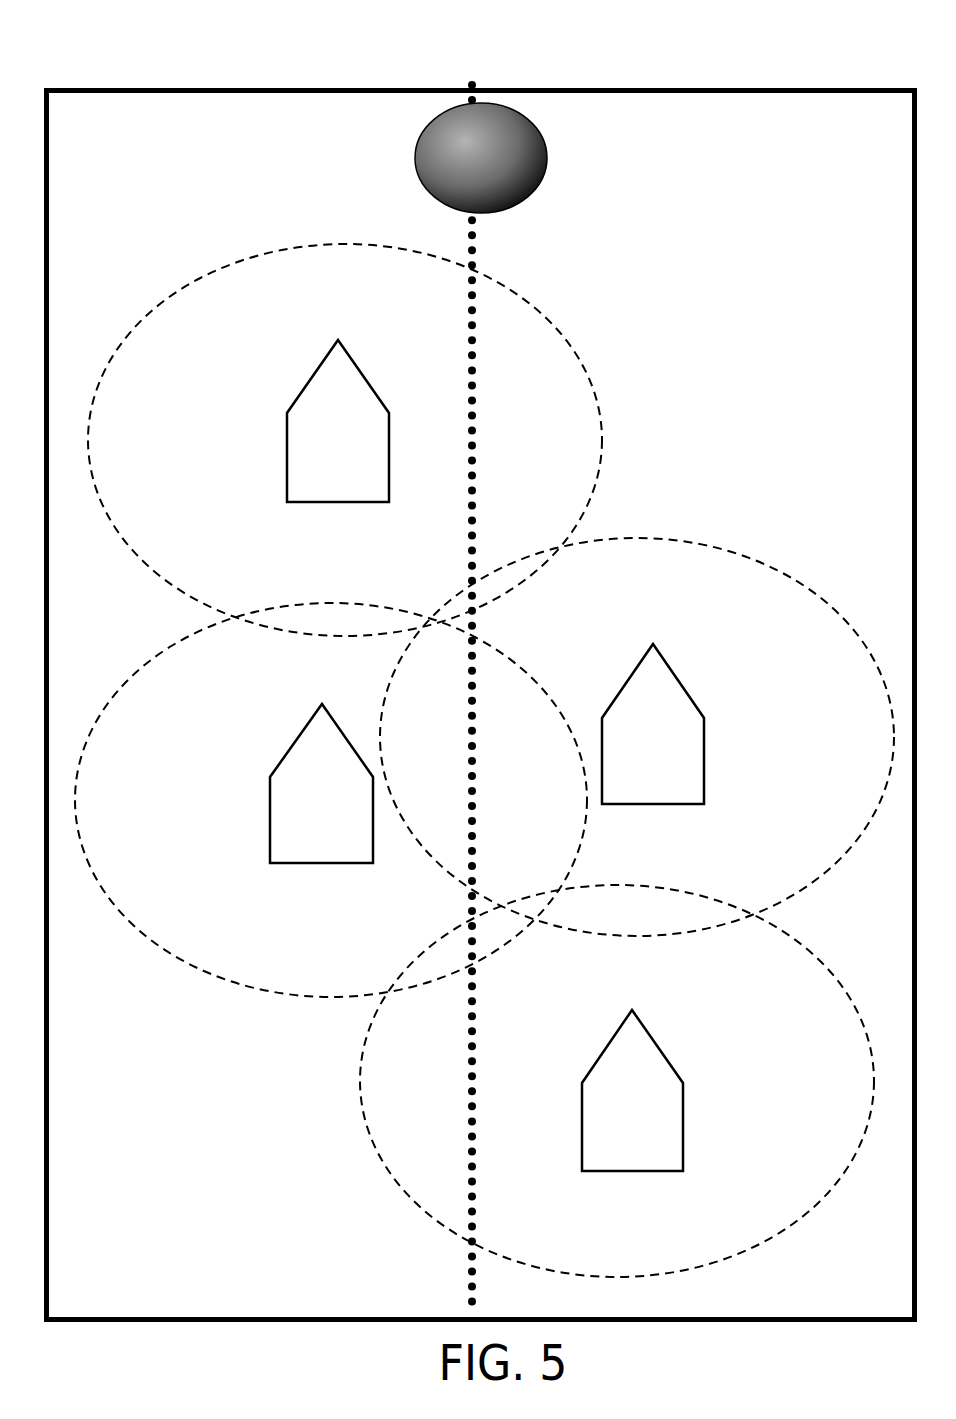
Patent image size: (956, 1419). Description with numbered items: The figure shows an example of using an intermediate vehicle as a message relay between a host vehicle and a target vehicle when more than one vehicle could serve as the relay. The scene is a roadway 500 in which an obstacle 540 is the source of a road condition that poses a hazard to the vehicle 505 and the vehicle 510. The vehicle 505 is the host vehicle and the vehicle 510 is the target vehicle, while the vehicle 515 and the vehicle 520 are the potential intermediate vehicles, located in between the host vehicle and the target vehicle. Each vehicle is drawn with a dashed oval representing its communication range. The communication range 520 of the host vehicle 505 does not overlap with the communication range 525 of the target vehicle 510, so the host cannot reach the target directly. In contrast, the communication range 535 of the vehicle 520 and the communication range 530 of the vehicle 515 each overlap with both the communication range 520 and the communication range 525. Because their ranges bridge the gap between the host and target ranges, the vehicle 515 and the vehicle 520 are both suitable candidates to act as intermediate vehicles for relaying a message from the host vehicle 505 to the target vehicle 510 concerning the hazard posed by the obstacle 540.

The roadway 500 is at (78, 71).
The host vehicle 505 is at (338, 421).
The target vehicle 510 is at (632, 1090).
The potential intermediate vehicle 515 is at (653, 724).
The potential intermediate vehicle / communication range of host vehicle 520 is at (345, 553).
The communication range of target vehicle 525 is at (617, 1081).
The communication range of vehicle 515 530 is at (637, 737).
The communication range of vehicle 520 535 is at (331, 800).
The obstacle 540 is at (481, 158).